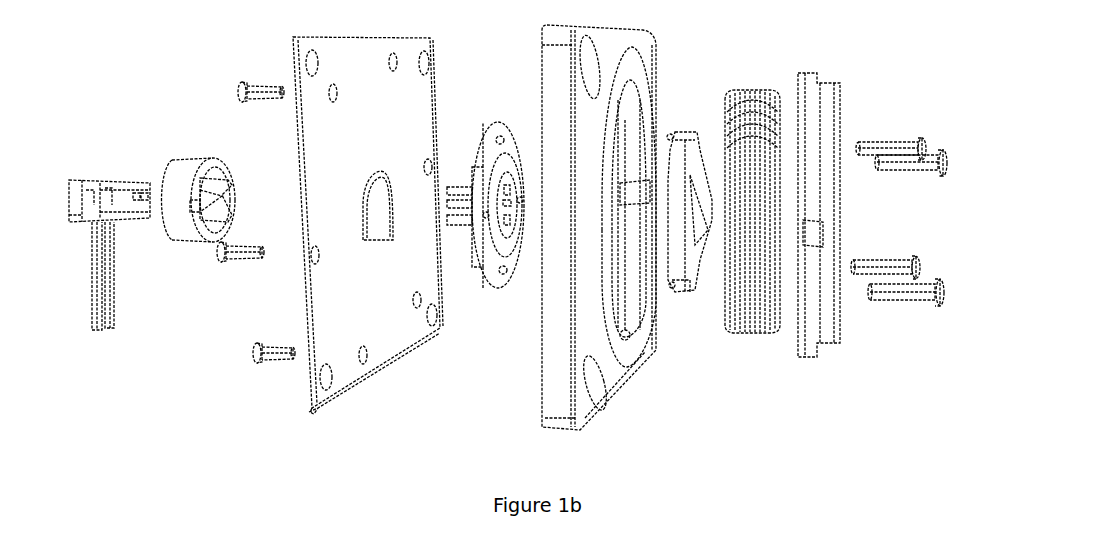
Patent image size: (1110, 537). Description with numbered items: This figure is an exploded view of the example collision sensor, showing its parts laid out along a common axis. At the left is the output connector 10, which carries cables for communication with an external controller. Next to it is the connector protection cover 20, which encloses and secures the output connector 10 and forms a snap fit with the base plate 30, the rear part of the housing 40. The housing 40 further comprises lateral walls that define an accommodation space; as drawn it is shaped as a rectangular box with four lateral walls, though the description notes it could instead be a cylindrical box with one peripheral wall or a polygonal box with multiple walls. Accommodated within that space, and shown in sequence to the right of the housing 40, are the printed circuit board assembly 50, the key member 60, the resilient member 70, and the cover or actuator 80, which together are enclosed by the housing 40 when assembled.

The output connector 10 is at (110, 334).
The connector protection cover 20 is at (187, 252).
The base plate 30 is at (339, 397).
The housing 40 is at (645, 359).
The printed circuit board assembly (PCBA) 50 is at (484, 289).
The key member 60 is at (693, 296).
The resilient member 70 is at (749, 343).
The actuator 80 is at (824, 351).